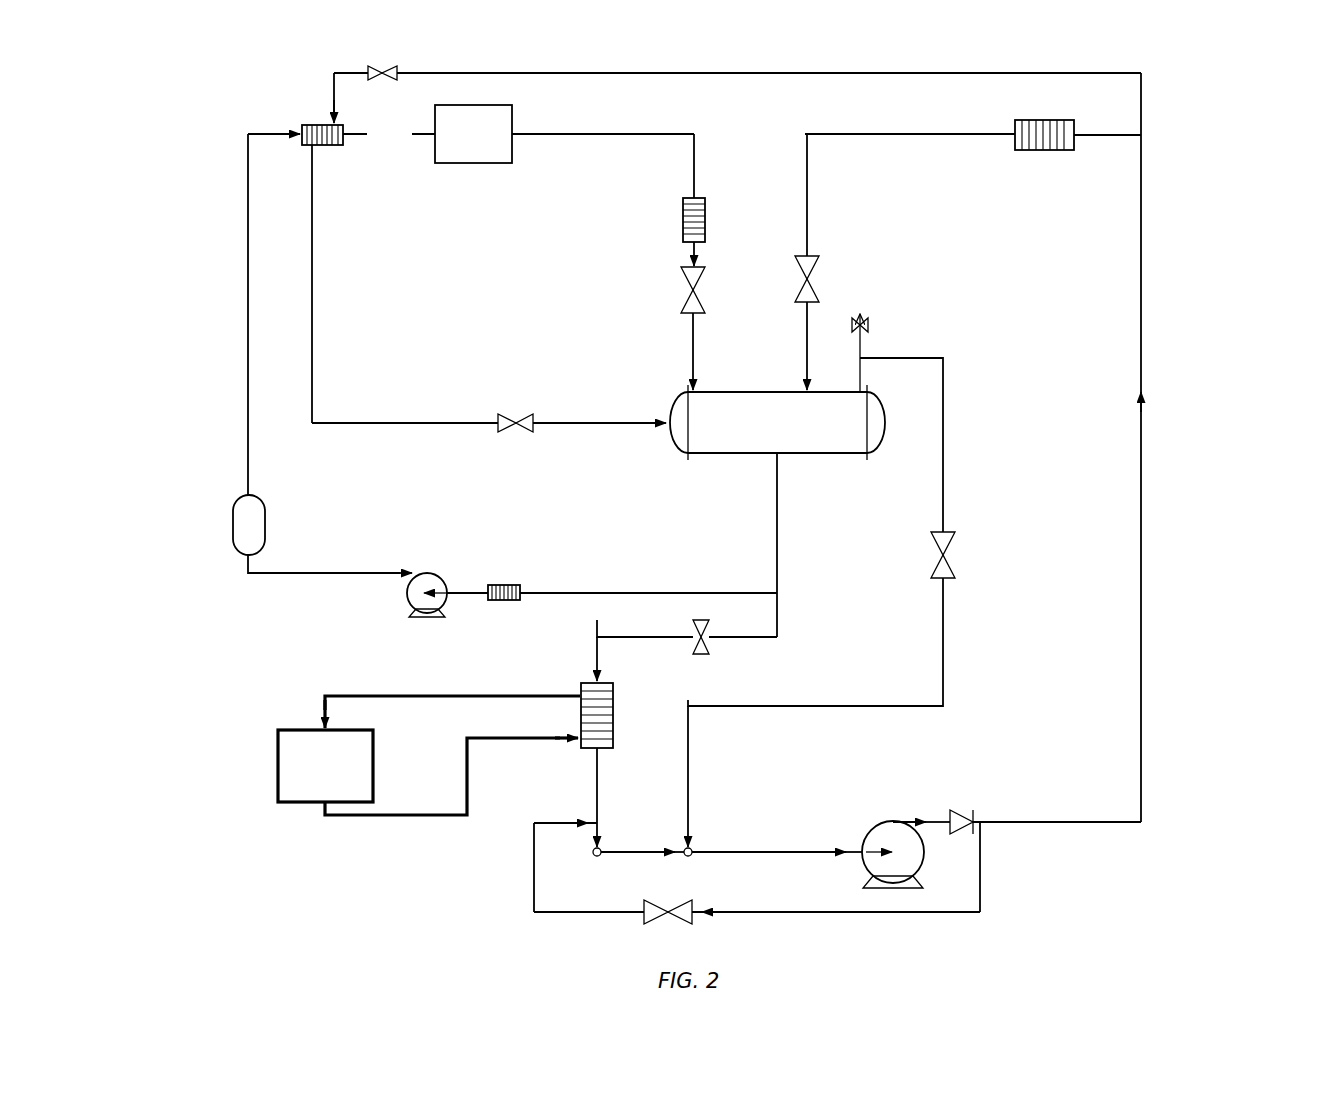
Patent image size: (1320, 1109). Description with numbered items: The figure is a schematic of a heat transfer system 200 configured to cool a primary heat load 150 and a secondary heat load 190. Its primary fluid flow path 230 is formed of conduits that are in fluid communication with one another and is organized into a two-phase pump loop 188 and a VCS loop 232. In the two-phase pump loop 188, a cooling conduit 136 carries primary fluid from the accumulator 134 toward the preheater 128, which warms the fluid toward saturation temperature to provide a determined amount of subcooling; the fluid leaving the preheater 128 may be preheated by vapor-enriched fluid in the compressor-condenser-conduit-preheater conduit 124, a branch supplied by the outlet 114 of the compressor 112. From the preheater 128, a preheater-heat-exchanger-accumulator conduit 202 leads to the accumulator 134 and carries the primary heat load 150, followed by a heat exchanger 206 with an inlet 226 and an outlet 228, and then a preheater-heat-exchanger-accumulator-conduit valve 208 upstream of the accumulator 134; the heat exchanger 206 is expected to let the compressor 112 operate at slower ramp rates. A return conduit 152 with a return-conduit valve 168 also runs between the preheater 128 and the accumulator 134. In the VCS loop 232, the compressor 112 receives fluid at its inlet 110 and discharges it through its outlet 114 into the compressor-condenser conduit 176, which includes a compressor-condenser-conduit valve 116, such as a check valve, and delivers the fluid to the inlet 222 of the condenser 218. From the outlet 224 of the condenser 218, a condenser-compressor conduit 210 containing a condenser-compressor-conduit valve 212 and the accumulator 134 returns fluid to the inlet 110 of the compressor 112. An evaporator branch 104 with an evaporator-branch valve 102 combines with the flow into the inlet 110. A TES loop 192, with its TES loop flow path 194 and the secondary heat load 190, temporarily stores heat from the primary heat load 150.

The evaporator-branch valve 102 is at (704, 639).
The evaporator branch 104 is at (781, 612).
The inlet to compressor 110 is at (783, 849).
The compressor 112 is at (877, 824).
The outlet from compressor 114 is at (930, 820).
The compressor-condenser-conduit valve 116 is at (961, 817).
The compressor-condenser-conduit-preheater conduit 124 is at (745, 73).
The preheater 128 is at (299, 131).
The accumulator 134 is at (666, 431).
The cooling conduit 136 is at (775, 494).
The primary heat load 150 is at (473, 134).
The return conduit 152 is at (317, 330).
The return-conduit valve 168 is at (523, 417).
The compressor-condenser conduit 176 is at (1138, 358).
The two-phase pump loop 188 is at (245, 221).
The secondary heat load 190 is at (325, 766).
The TES loop 192 is at (379, 822).
The TES loop flow path 194 is at (452, 707).
The heat transfer system 200 is at (1157, 800).
The preheater-heat-exchanger-accumulator conduit 202 is at (559, 139).
The heat exchanger 206 is at (682, 222).
The preheater-heat-exchanger-accumulator-conduit valve 208 is at (690, 289).
The condenser-compressor conduit 210 is at (803, 361).
The condenser-compressor-conduit valve 212 is at (815, 279).
The condenser 218 is at (1045, 150).
The inlet of condenser 222 is at (1090, 137).
The outlet of condenser 224 is at (1012, 131).
The inlet of heat exchanger 226 is at (694, 192).
The outlet of heat exchanger 228 is at (688, 247).
The primary fluid flow path 230 is at (389, 135).
The VCS loop 232 is at (1144, 215).